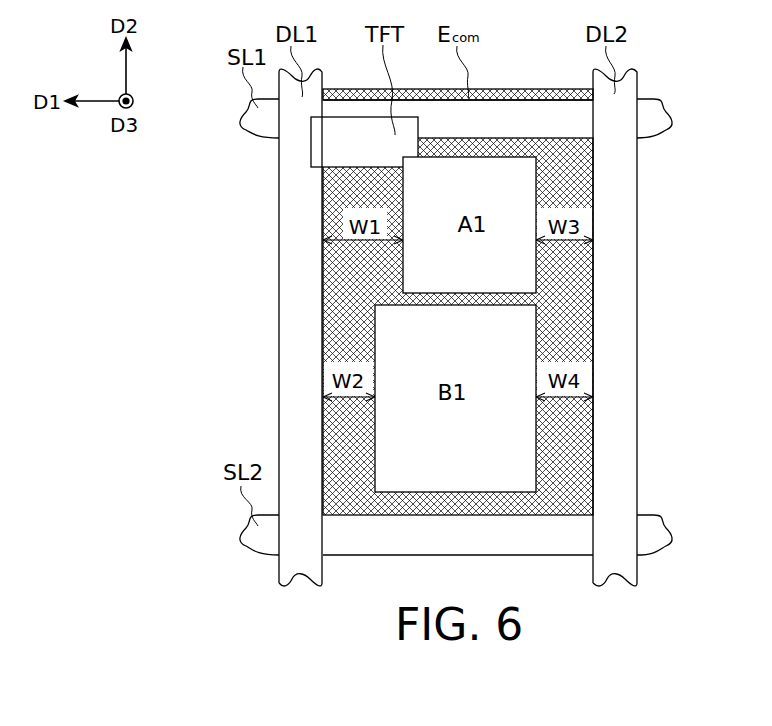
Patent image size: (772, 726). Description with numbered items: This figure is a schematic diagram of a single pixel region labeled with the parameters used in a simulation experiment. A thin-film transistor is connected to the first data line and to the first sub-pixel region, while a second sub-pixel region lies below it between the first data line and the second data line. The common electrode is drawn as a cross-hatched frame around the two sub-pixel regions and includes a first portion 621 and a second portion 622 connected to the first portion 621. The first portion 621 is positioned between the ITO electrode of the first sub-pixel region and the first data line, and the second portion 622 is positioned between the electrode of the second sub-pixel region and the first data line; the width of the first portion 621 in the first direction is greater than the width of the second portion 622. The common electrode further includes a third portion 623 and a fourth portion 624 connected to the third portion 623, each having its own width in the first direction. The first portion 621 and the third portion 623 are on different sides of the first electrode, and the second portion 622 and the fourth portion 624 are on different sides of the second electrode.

The first portion 621 is at (390, 196).
The second portion 622 is at (358, 333).
The third portion 623 is at (570, 183).
The fourth portion 624 is at (566, 338).